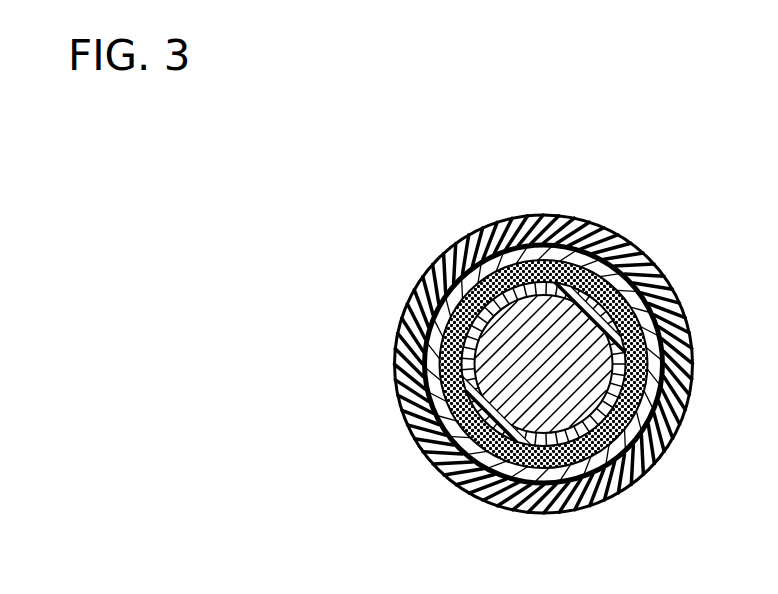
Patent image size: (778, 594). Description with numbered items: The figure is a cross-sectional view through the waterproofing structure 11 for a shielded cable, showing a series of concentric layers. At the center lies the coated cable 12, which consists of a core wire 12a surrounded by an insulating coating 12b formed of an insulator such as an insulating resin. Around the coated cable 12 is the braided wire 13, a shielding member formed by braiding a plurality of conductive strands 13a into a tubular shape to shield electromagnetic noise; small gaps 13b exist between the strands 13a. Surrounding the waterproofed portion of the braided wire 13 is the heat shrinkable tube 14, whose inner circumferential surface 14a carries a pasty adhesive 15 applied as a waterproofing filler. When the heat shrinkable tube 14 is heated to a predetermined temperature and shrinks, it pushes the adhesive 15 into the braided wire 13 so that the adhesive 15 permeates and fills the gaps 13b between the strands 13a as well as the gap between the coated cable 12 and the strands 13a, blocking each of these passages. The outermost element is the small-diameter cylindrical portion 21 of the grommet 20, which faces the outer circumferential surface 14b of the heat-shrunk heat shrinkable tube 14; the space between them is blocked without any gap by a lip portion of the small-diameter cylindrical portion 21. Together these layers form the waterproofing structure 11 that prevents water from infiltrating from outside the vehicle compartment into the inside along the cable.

The waterproofing structure 11 is at (613, 518).
The coated cable 12 is at (468, 316).
The core wire 12a is at (492, 345).
The insulating coating 12b is at (470, 383).
The braided wire 13 is at (632, 325).
The strands 13a is at (642, 350).
The gaps 13b is at (645, 390).
The heat shrinkable tube 14 is at (498, 250).
The inner circumferential surface 14a is at (565, 263).
The outer circumferential surface 14b is at (535, 242).
The adhesive 15 is at (620, 290).
The grommet 20 is at (569, 357).
The small-diameter cylindrical portion 21 is at (600, 233).